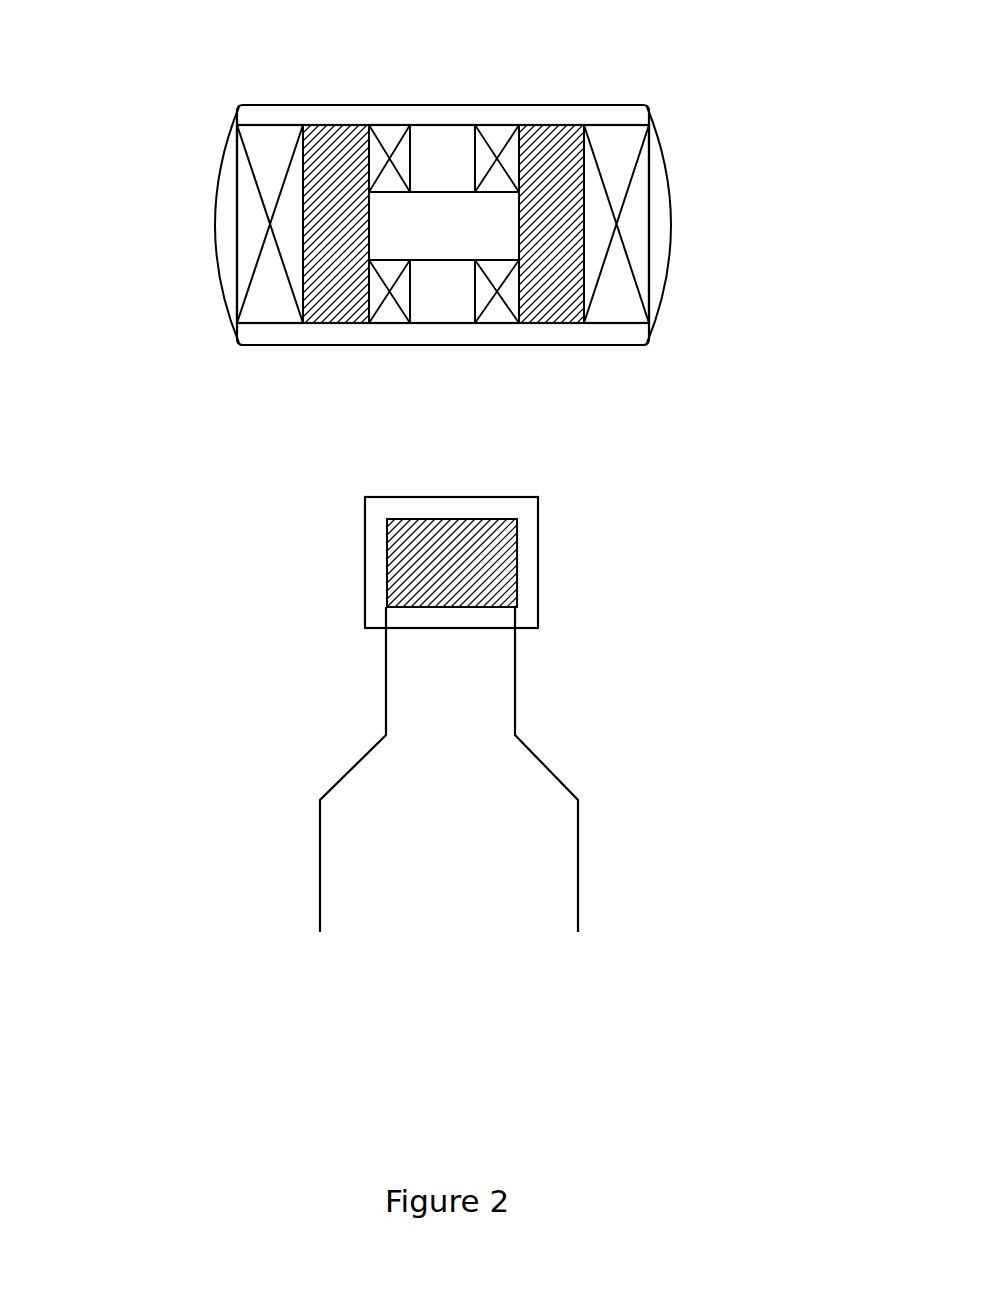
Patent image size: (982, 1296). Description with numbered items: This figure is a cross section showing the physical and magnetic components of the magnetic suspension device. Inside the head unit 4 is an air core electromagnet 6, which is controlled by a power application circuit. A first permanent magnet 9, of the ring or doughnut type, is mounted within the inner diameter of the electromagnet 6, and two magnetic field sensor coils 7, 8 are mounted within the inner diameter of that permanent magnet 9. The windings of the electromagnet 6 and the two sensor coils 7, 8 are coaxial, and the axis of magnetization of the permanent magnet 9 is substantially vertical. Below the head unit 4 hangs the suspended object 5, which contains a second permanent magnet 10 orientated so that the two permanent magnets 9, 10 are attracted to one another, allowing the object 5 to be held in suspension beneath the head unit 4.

The head unit 4 is at (259, 105).
The object 5 is at (405, 845).
The air core electromagnet 6 is at (627, 170).
The magnetic field sensor coil 7 is at (367, 322).
The magnetic field sensor coil 8 is at (410, 134).
The first permanent magnet 9 is at (567, 130).
The second permanent magnet 10 is at (405, 563).